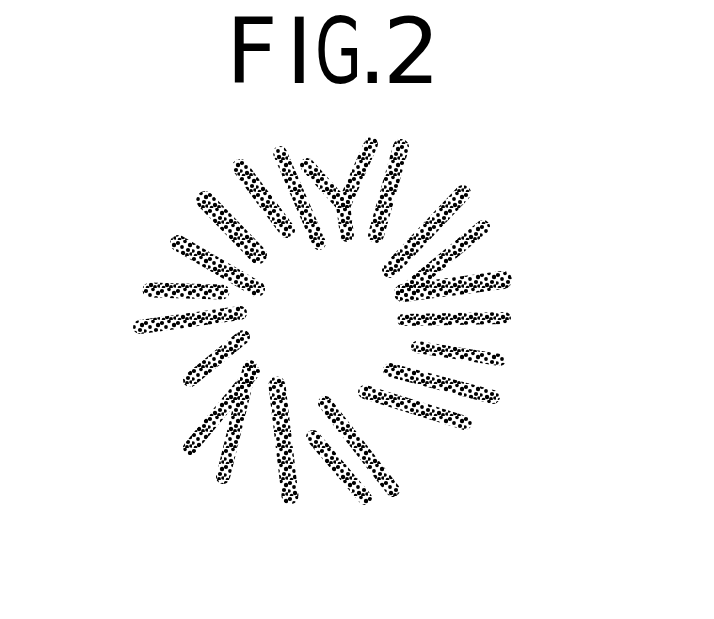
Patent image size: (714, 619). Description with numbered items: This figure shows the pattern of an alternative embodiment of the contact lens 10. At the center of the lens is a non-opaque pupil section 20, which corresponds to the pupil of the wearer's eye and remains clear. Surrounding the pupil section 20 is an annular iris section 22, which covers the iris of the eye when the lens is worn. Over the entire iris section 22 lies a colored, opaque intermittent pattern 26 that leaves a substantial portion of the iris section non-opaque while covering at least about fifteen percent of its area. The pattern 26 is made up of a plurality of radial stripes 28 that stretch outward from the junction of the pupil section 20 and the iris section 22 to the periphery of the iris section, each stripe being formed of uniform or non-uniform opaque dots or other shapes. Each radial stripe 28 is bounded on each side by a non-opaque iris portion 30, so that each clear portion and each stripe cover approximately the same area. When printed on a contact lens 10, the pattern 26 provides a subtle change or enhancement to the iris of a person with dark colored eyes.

The contact lens 10 is at (545, 114).
The pupil section 20 is at (357, 327).
The iris section 22 is at (467, 354).
The colored, opaque intermittent pattern 26 is at (425, 413).
The radial stripes 28 is at (222, 420).
The non-opaque iris portion 30 is at (277, 187).